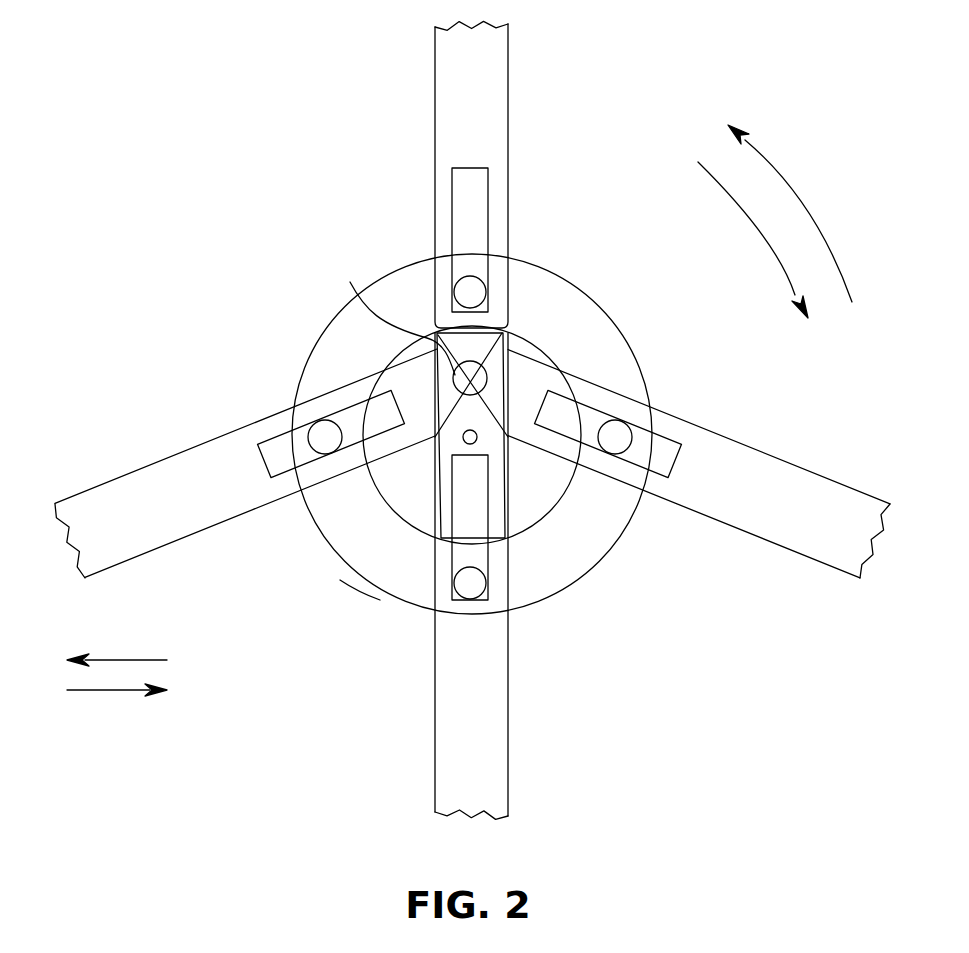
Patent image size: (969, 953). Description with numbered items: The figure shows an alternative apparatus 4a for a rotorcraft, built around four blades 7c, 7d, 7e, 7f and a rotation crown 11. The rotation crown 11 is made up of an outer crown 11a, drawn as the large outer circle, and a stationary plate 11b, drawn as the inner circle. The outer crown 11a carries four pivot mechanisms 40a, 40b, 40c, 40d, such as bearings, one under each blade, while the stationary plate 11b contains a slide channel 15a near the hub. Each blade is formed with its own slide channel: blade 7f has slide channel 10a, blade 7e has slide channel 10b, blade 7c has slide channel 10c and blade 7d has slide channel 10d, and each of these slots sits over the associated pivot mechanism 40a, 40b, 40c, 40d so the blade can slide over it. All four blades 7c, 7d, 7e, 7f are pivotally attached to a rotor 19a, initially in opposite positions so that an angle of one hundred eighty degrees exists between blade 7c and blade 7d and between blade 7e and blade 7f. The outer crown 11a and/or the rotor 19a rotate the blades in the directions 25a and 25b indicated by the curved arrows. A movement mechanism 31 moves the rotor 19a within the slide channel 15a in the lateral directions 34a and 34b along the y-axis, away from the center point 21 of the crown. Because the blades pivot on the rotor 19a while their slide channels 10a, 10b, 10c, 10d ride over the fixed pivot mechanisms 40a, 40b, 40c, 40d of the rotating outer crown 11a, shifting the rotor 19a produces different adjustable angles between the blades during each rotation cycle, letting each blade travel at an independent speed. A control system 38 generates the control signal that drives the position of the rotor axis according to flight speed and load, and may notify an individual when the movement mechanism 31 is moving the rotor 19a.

The apparatus 4a is at (222, 172).
The blade 7c is at (128, 472).
The blade 7d is at (815, 562).
The blade 7e is at (435, 758).
The blade 7f is at (435, 107).
The slide channel 10a is at (463, 192).
The slide channel 10b is at (488, 560).
The slide channel 10c is at (293, 455).
The slide channel 10d is at (662, 460).
The rotation crown 11 is at (350, 608).
The outer crown 11a is at (357, 558).
The stationary plate 11b is at (385, 488).
The slide channel 15a is at (488, 367).
The rotor 19a is at (387, 314).
The center point 21 is at (463, 440).
The direction 25a is at (805, 207).
The direction 25b is at (768, 240).
The movement mechanism 31 is at (540, 506).
The lateral direction 34a is at (112, 691).
The lateral direction 34b is at (118, 659).
The control system 38 is at (537, 518).
The pivot mechanism 40a is at (474, 288).
The pivot mechanism 40b is at (323, 428).
The pivot mechanism 40c is at (617, 435).
The pivot mechanism 40d is at (466, 592).